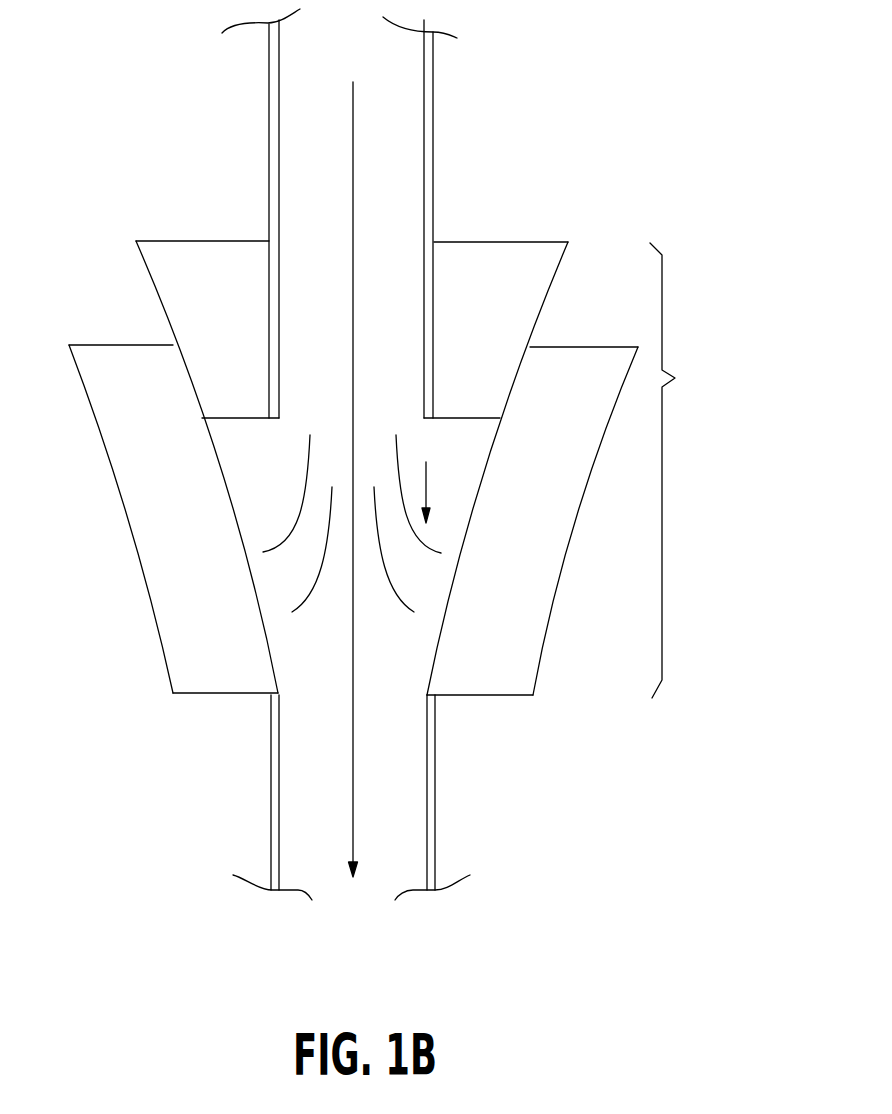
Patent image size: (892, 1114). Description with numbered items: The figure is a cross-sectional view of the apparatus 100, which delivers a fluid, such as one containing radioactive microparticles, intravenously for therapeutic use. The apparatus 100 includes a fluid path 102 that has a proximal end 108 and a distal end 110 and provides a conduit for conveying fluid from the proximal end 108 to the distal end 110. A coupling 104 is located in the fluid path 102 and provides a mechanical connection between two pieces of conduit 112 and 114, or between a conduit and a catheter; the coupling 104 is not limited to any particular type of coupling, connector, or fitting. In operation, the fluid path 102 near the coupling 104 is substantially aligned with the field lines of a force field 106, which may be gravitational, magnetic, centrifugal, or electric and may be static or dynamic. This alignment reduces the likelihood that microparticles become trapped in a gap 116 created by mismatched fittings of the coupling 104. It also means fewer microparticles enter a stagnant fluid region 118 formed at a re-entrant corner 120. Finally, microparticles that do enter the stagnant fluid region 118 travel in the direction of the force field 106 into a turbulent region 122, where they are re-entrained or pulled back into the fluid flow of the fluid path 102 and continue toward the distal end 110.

The apparatus 100 is at (607, 124).
The fluid path 102 is at (353, 99).
The coupling 104 is at (675, 378).
The force field 106 is at (427, 480).
The proximal end 108 is at (267, 25).
The distal end 110 is at (268, 888).
The conduit 112 is at (424, 170).
The conduit 114 is at (436, 788).
The gap 116 is at (190, 392).
The stagnant fluid region 118 is at (251, 463).
The re-entrant corner 120 is at (269, 412).
The turbulent region 122 is at (287, 562).